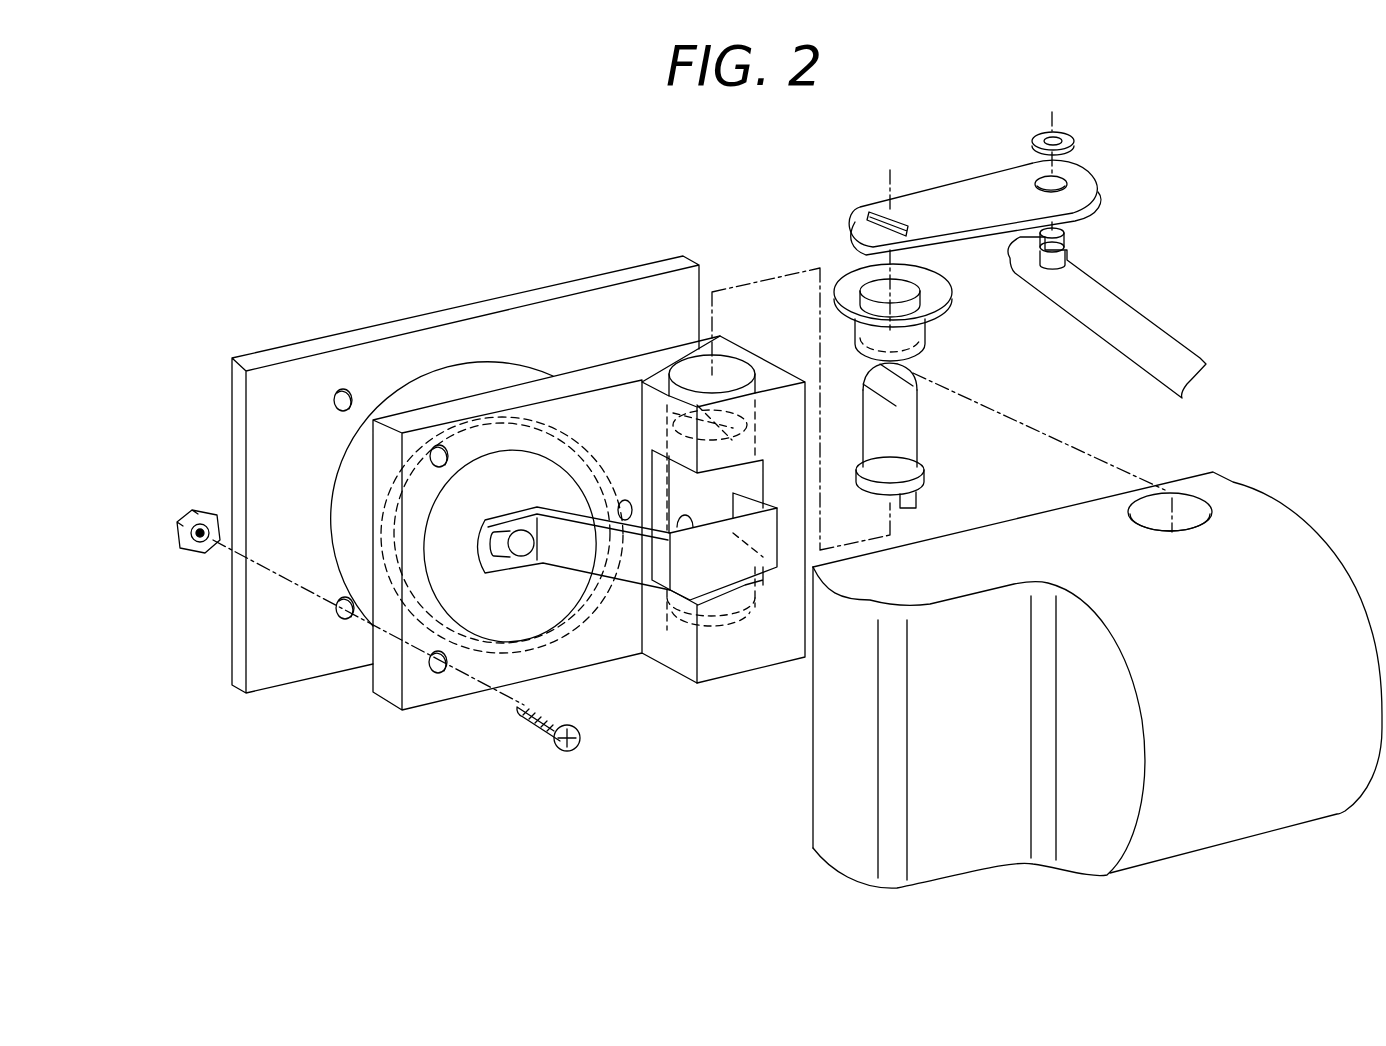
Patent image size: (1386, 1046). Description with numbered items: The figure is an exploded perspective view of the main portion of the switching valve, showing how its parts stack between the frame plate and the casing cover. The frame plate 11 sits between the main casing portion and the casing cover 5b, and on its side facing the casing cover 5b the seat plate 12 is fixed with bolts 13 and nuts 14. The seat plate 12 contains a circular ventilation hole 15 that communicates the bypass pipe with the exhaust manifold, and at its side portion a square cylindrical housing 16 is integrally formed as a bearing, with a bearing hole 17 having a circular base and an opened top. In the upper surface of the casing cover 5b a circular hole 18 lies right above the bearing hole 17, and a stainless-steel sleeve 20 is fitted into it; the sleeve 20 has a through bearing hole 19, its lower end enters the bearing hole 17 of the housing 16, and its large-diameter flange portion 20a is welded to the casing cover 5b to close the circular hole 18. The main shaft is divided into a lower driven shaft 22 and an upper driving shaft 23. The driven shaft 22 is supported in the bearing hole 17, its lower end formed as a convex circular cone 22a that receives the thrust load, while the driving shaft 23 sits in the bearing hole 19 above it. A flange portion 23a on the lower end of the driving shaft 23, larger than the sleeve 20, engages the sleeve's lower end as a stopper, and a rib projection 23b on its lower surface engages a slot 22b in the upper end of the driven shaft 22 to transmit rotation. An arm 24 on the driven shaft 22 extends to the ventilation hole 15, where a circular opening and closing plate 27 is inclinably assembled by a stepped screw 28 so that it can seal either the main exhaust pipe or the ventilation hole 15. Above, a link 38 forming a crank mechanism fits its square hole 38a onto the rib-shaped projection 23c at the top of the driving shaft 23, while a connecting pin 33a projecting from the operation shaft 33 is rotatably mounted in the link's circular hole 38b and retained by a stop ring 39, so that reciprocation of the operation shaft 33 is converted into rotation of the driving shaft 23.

The casing cover 5b is at (1273, 511).
The frame plate 11 is at (293, 345).
The seat plate 12 is at (425, 710).
The bolts 13 is at (540, 735).
The nuts 14 is at (200, 553).
The circular ventilation hole 15 is at (537, 628).
The square cylindrical housing 16 is at (745, 663).
The bearing hole 17 is at (735, 368).
The circular hole 18 is at (1206, 501).
The bearing hole 19 is at (870, 292).
The sleeve 20 is at (923, 335).
The flange portion 20a is at (940, 286).
The driven shaft 22 is at (648, 482).
The convex circular cone 22a is at (729, 625).
The slot 22b is at (757, 422).
The driving shaft 23 is at (910, 420).
The flange portion 23a is at (930, 468).
The rib projection 23b is at (922, 495).
The rib-shaped projection 23c is at (906, 375).
The arm 24 is at (617, 587).
The opening and closing plate 27 is at (475, 607).
The stepped screw 28 is at (521, 537).
The operation shaft 33 is at (1145, 318).
The connecting pin 33a is at (1066, 253).
The link 38 is at (973, 177).
The square hole 38a is at (900, 222).
The circular hole 38b is at (1067, 178).
The stop ring 39 is at (1057, 131).